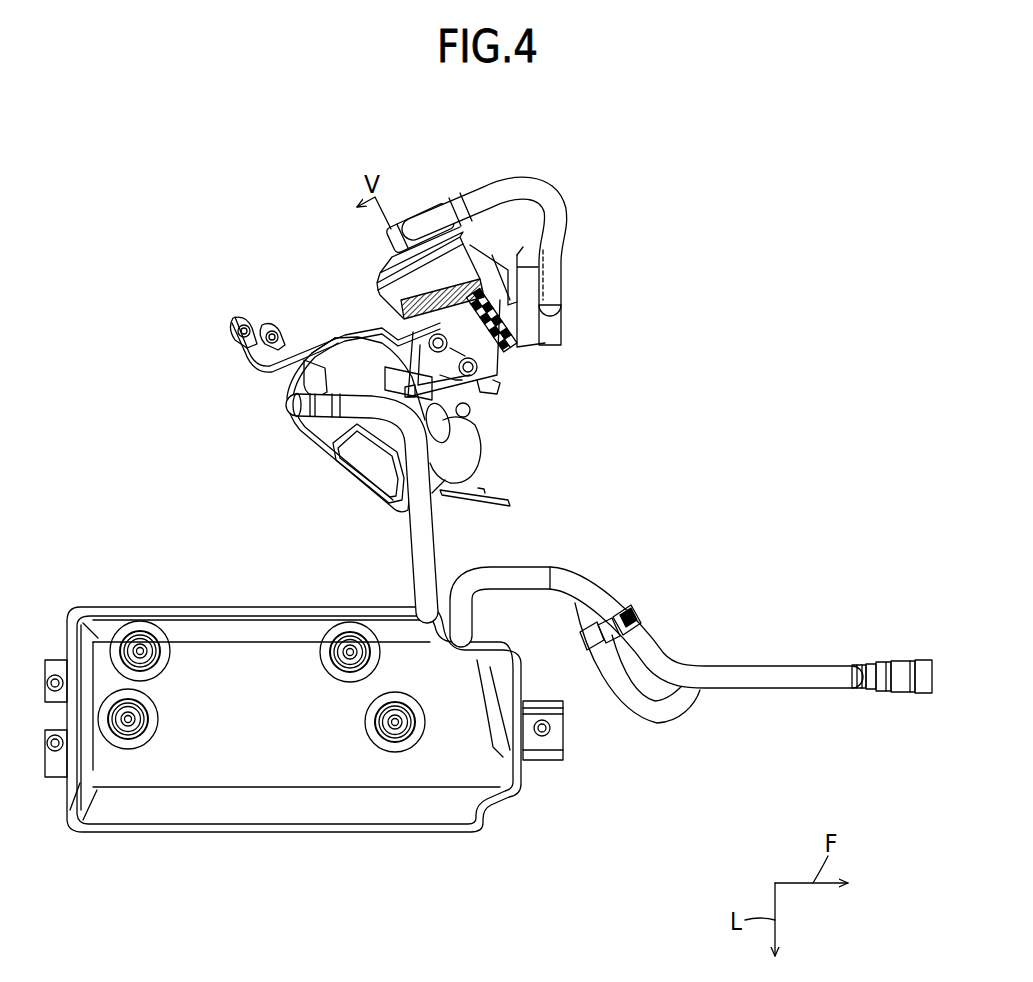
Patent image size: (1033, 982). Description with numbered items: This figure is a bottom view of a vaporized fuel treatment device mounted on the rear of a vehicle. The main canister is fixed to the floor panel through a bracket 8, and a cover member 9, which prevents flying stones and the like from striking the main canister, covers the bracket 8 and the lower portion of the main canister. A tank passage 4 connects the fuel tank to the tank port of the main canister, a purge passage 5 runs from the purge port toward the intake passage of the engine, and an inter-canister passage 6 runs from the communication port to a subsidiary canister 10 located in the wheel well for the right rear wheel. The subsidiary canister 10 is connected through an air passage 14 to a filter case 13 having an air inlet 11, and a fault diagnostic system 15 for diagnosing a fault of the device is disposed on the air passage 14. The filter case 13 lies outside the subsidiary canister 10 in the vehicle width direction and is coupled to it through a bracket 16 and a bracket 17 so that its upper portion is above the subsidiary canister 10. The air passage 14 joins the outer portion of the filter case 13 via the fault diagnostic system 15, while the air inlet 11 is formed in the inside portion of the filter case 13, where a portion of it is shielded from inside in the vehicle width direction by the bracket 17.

The tank passage 4 is at (760, 665).
The purge passage 5 is at (657, 723).
The inter-canister passage 6 is at (408, 540).
The bracket 8 is at (547, 760).
The cover member 9 is at (263, 832).
The subsidiary canister 10 is at (472, 430).
The air inlet 11 is at (480, 278).
The filter case 13 is at (377, 288).
The air passage 14 is at (558, 190).
The fault diagnostic system 15 is at (503, 297).
The bracket 16 is at (263, 327).
The bracket 17 is at (395, 332).